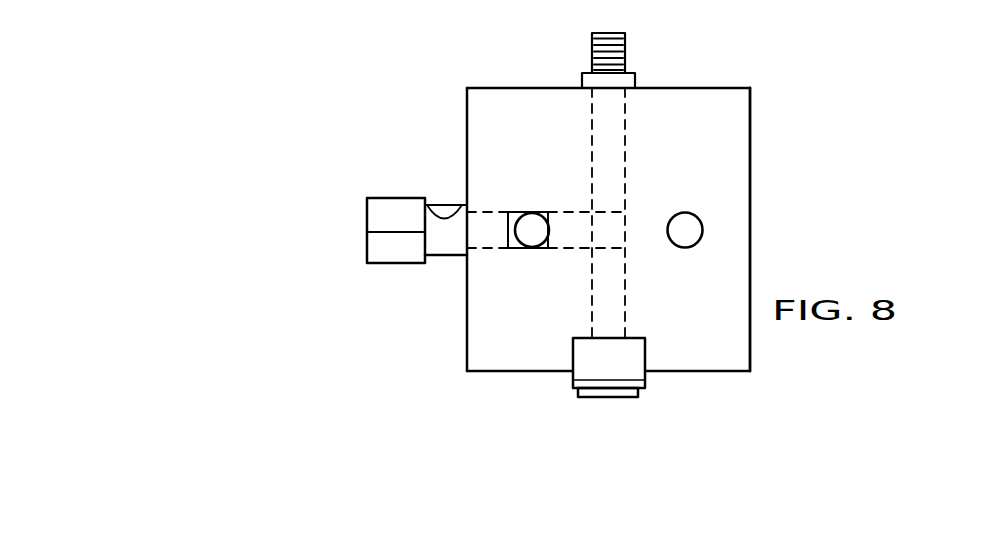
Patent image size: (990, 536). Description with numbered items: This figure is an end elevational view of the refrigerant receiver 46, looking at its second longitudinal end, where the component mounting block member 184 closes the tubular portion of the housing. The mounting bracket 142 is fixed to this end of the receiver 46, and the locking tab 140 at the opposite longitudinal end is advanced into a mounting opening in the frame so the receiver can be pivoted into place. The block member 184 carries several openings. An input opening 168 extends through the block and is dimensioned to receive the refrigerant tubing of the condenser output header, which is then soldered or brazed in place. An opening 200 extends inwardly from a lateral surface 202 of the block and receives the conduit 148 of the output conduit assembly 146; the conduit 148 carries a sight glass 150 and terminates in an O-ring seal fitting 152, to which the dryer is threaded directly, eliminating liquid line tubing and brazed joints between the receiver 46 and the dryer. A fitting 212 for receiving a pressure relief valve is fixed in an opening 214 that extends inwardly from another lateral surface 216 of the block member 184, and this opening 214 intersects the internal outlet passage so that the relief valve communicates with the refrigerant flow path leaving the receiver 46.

The refrigerant receiver 46 is at (755, 74).
The lateral surface 216 is at (495, 88).
The lateral surface 202 is at (465, 333).
The component mounting block member 184 is at (528, 373).
The fitting 212 is at (627, 58).
The opening 214 is at (624, 190).
The opening 200 is at (570, 236).
The input opening 168 is at (698, 222).
The mounting bracket 142 is at (637, 367).
The locking tab 140 is at (637, 396).
The output conduit assembly 146 is at (382, 205).
The O-ring seal fitting 152 is at (407, 250).
The conduit 148 is at (452, 245).
The sight glass 150 is at (443, 208).